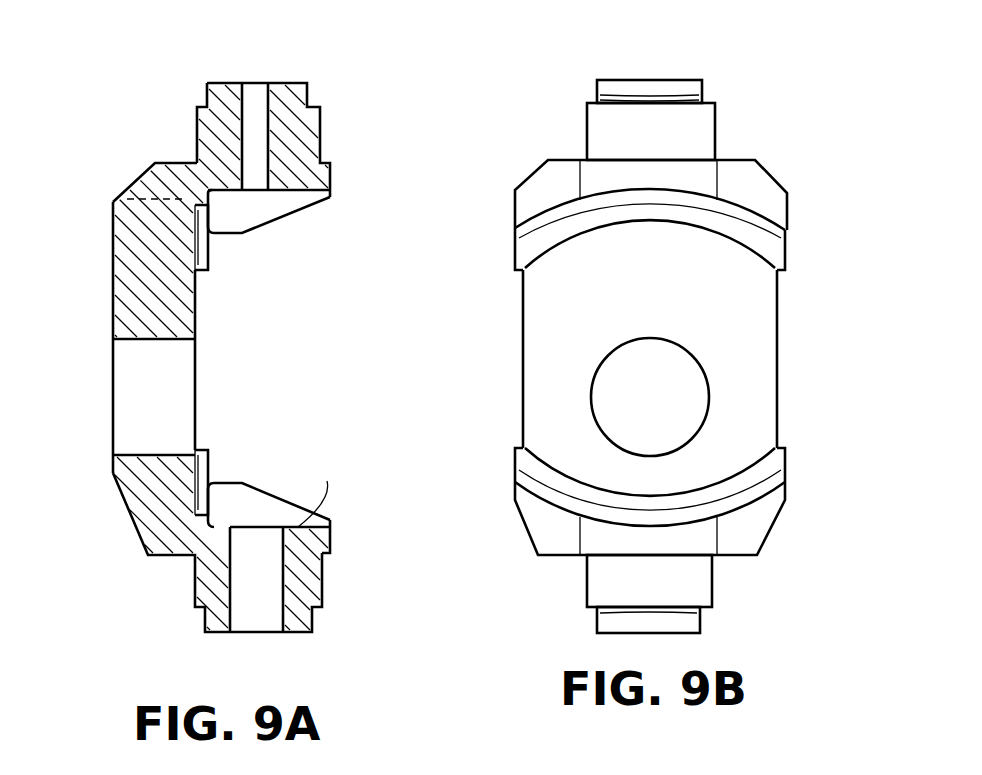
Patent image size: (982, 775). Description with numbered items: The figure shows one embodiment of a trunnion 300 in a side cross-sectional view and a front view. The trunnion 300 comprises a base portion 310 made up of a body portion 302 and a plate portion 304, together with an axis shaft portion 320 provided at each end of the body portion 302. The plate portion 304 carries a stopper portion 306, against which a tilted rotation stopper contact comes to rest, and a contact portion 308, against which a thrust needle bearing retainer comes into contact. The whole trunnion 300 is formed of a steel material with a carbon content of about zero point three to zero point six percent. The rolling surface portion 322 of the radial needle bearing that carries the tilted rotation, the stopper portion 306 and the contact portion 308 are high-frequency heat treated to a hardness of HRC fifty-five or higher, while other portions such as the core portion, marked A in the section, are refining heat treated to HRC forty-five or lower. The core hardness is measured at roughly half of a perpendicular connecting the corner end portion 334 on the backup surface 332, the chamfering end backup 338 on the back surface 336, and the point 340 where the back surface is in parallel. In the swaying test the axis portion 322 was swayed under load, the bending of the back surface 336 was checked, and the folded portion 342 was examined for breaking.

In FIG. 9A, the trunnion 300 is at (318, 80).
In FIG. 9B, the trunnion 300 is at (728, 103).
In FIG. 9A, the body portion 302 is at (185, 318).
In FIG. 9A, the plate portion 304 is at (303, 184).
In FIG. 9B, the stopper portion 306 is at (537, 182).
In FIG. 9B, the contact portion 308 is at (537, 236).
In FIG. 9A, the base portion 310 is at (108, 339).
In FIG. 9A, the axis shaft portion 320 is at (223, 90).
In FIG. 9A, the rolling surface portion 322 is at (322, 127).
In FIG. 9B, the rolling surface portion 322 is at (587, 127).
In FIG. 9A, the backup surface 332 is at (195, 410).
In FIG. 9A, the corner end portion 334 is at (213, 232).
In FIG. 9A, the back surface 336 is at (113, 270).
In FIG. 9A, the chamfering end backup 338 is at (137, 540).
In FIG. 9A, the point where the back surface is in parallel 340 is at (112, 205).
In FIG. 9A, the folded portion 342 is at (153, 508).